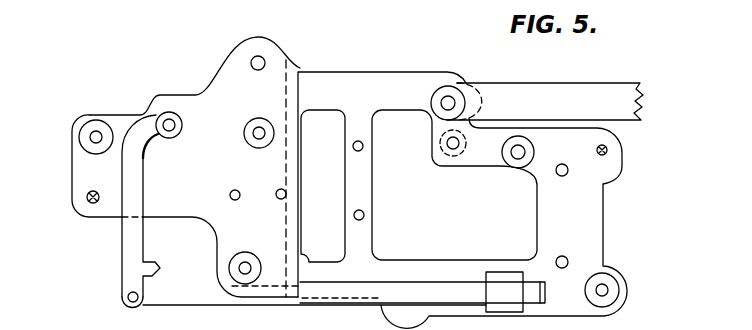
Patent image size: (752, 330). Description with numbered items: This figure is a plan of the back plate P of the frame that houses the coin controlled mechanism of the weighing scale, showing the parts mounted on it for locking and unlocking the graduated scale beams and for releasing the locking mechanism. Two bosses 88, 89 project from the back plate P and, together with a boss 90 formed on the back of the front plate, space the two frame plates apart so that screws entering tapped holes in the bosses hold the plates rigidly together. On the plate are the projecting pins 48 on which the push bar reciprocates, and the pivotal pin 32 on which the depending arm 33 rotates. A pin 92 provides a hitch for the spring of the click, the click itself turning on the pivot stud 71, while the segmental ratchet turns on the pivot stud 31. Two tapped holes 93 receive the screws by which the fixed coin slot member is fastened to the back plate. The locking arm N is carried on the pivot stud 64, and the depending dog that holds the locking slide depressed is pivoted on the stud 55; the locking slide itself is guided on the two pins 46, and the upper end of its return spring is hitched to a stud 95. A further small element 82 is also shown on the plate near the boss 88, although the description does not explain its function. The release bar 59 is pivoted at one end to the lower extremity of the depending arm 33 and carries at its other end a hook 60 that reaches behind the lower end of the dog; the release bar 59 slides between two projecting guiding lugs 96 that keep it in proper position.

The pivot stud 31 is at (238, 269).
The pivotal pin 32 is at (168, 121).
The depending arm 33 is at (130, 236).
The pins 46 is at (558, 178).
The projecting pins 48 is at (281, 200).
The pivot stud 55 is at (516, 155).
The release bar 59 is at (205, 302).
The hook 60 is at (547, 290).
The pivot stud 64 is at (450, 100).
The pivot stud 71 is at (254, 136).
The screw 82 is at (86, 201).
The boss 88 is at (80, 139).
The boss 89 is at (624, 290).
The boss 90 is at (452, 158).
The pin 92 is at (266, 58).
The tapped holes 93 is at (354, 152).
The stud 95 is at (610, 150).
The guiding lugs 96 is at (503, 271).
The back plate P is at (382, 88).
The locking arm N is at (545, 101).